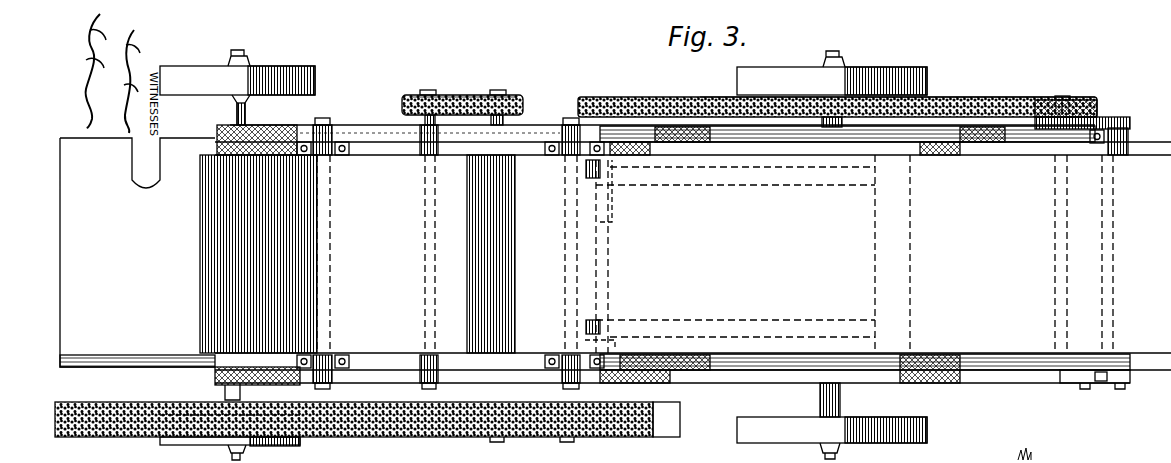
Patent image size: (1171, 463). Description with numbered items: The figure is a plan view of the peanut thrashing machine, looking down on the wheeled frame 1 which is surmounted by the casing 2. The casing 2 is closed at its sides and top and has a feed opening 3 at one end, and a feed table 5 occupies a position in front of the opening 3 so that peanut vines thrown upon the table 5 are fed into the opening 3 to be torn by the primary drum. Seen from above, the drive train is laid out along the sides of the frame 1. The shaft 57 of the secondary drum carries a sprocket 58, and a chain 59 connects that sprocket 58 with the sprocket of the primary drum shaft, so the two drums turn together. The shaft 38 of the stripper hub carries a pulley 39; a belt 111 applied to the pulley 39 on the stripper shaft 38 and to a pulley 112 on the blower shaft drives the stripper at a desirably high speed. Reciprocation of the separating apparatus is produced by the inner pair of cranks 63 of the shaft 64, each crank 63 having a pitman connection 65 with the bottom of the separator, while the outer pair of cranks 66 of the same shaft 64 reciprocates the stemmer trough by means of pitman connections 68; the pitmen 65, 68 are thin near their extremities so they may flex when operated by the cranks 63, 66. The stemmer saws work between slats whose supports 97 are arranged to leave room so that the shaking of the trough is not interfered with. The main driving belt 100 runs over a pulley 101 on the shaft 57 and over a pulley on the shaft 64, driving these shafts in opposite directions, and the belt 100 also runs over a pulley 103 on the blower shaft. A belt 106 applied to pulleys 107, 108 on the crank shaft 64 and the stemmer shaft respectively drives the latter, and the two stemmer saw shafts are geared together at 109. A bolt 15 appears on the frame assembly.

The wheeled frame 1 is at (688, 133).
The casing 2 is at (820, 254).
The feed opening 3 is at (194, 238).
The feed table 5 is at (137, 252).
The bolt 15 is at (345, 123).
The shaft 38 is at (404, 95).
The pulley 39 is at (449, 87).
The shaft 57 is at (578, 124).
The sprocket 58 is at (565, 118).
The chain 59 is at (547, 122).
The inner pair of cranks 63 is at (598, 196).
The shaft 64 is at (600, 223).
The pitman connection 65 is at (710, 185).
The outer pair of cranks 66 is at (640, 167).
The pitman connection 68 is at (703, 150).
The supports 97 is at (1062, 96).
The belt 100 is at (382, 437).
The pulley 101 is at (608, 440).
The pulley 103 is at (465, 445).
The belt 106 is at (960, 97).
The pulley 107 is at (490, 210).
The pulley 108 is at (1080, 100).
The gearing 109 is at (1027, 100).
The belt 111 is at (452, 100).
The pulley 112 is at (478, 106).